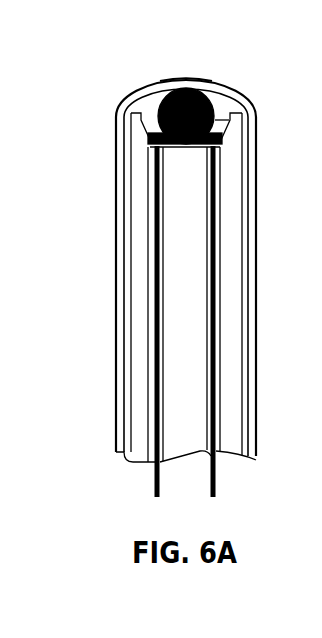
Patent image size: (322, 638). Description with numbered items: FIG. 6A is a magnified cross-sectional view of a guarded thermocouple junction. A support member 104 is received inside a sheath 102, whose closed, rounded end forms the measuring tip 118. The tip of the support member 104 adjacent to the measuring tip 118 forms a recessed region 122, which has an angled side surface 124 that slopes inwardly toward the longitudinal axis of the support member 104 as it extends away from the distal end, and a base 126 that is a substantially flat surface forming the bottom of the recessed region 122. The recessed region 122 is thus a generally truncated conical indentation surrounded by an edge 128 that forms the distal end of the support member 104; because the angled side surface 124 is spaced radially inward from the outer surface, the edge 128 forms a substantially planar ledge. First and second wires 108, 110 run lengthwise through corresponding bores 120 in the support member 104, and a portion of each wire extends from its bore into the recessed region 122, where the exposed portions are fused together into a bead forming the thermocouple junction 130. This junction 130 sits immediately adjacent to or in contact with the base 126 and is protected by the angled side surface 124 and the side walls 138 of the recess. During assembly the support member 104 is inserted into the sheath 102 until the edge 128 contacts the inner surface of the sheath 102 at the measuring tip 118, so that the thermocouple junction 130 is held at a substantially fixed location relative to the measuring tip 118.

The sheath 102 is at (253, 372).
The support member 104 is at (237, 332).
The first wire 108 is at (155, 487).
The second wire 110 is at (222, 487).
The measuring tip 118 is at (177, 80).
The bores 120 is at (153, 415).
The recessed region 122 is at (218, 117).
The angled side surface 124 is at (147, 128).
The base 126 is at (170, 146).
The edge 128 is at (140, 113).
The thermocouple junction 130 is at (186, 88).
The side walls 138 is at (137, 128).